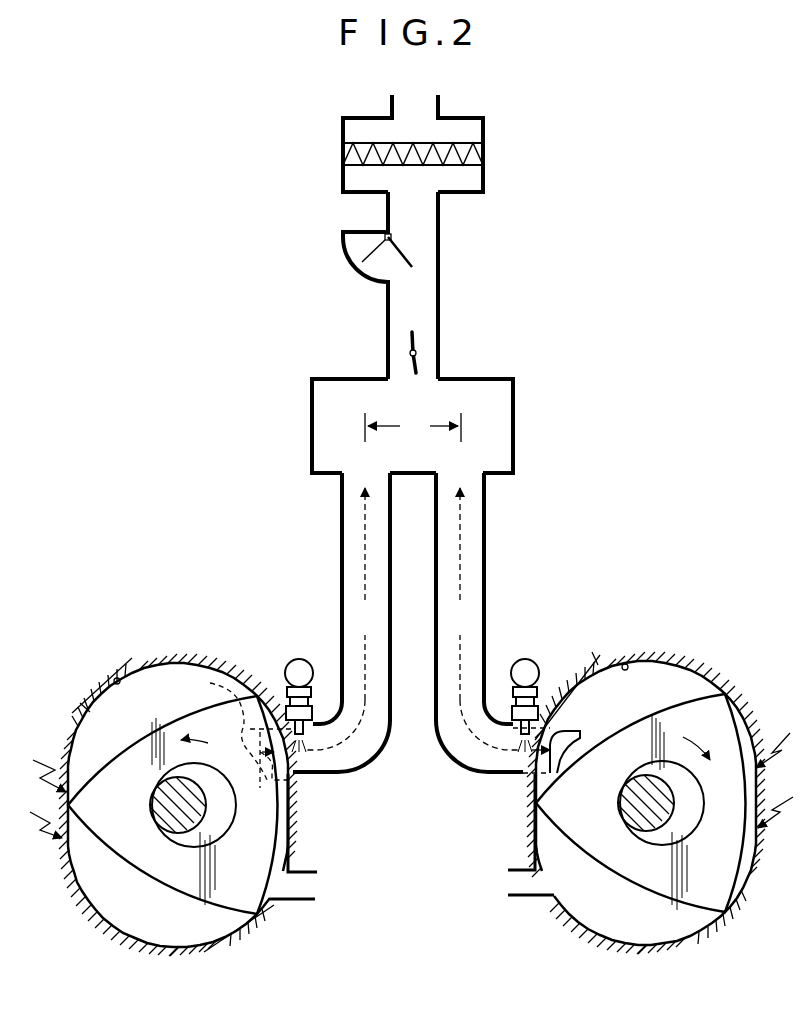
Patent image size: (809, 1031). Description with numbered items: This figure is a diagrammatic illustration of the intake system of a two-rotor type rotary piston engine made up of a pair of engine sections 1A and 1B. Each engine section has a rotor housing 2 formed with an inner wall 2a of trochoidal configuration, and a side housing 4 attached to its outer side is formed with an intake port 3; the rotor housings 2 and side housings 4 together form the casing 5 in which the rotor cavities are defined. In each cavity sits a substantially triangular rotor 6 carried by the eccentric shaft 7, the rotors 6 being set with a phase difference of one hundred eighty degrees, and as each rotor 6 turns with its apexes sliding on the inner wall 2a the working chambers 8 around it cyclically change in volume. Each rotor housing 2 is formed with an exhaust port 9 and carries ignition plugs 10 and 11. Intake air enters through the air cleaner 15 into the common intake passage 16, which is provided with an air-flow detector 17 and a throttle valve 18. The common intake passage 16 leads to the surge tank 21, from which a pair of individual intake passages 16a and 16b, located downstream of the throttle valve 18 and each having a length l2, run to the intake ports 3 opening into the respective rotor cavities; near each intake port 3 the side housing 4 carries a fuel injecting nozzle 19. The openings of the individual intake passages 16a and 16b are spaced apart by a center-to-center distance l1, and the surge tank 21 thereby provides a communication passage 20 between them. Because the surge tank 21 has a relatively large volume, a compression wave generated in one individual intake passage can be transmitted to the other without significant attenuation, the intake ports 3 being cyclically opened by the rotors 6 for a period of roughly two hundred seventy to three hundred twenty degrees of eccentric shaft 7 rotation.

The engine section 1A is at (170, 628).
The engine section 1B is at (700, 628).
The rotor housing 2 is at (142, 660).
The inner wall 2a is at (112, 676).
The intake port 3 is at (228, 685).
The side housing 4 is at (80, 703).
The casing 5 is at (208, 660).
The rotor 6 is at (203, 905).
The eccentric shaft 7 is at (158, 822).
The working chamber 8 is at (146, 705).
The exhaust port 9 is at (289, 904).
The ignition plug 10 is at (46, 823).
The ignition plug 11 is at (52, 770).
The air cleaner 15 is at (486, 130).
The common intake passage 16 is at (425, 304).
The individual intake passage 16a is at (370, 745).
The individual intake passage 16b is at (457, 745).
The air-flow detector 17 is at (352, 258).
The throttle valve 18 is at (416, 345).
The fuel injecting nozzle 19 is at (302, 658).
The communication passage 20 is at (416, 477).
The surge tank 21 is at (516, 433).